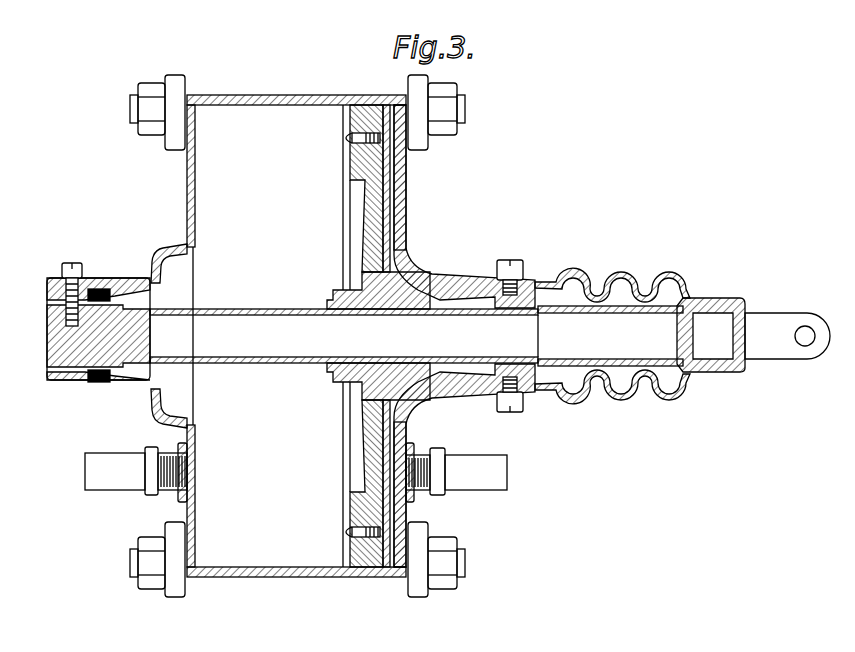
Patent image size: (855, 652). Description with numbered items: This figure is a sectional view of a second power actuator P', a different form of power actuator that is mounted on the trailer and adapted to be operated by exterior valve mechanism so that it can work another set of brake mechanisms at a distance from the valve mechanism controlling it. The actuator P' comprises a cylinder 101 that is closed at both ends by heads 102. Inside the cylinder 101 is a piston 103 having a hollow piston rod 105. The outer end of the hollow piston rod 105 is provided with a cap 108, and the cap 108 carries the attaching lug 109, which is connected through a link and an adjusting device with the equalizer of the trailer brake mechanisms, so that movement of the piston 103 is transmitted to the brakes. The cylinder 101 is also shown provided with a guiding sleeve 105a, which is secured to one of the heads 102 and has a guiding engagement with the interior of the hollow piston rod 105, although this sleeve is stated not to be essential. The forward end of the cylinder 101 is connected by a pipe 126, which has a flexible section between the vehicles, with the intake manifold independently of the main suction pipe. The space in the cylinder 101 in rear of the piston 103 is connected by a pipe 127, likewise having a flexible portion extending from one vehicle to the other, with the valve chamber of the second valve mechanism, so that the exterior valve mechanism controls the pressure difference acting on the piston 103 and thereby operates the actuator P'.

The cylinder 101 is at (272, 95).
The heads 102 is at (188, 206).
The piston 103 is at (388, 319).
The second power actuator P' is at (362, 171).
The guiding sleeve 105a is at (252, 362).
The hollow piston rod 105 is at (617, 372).
The cap 108 is at (722, 304).
The attaching lug 109 is at (787, 358).
The pipe 126 is at (98, 460).
The pipe 127 is at (487, 480).